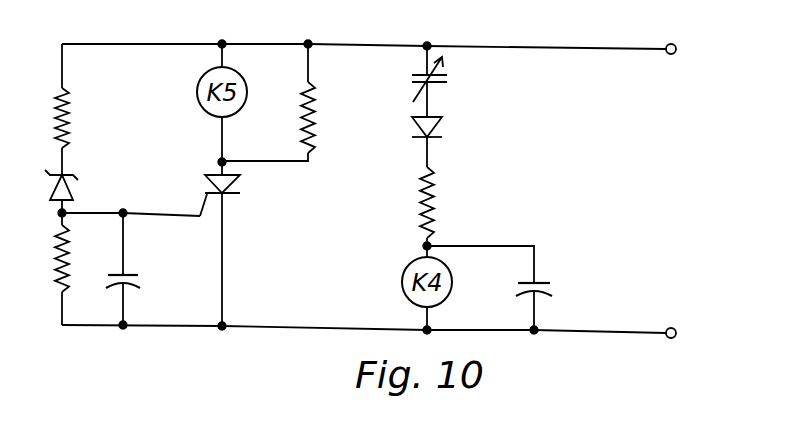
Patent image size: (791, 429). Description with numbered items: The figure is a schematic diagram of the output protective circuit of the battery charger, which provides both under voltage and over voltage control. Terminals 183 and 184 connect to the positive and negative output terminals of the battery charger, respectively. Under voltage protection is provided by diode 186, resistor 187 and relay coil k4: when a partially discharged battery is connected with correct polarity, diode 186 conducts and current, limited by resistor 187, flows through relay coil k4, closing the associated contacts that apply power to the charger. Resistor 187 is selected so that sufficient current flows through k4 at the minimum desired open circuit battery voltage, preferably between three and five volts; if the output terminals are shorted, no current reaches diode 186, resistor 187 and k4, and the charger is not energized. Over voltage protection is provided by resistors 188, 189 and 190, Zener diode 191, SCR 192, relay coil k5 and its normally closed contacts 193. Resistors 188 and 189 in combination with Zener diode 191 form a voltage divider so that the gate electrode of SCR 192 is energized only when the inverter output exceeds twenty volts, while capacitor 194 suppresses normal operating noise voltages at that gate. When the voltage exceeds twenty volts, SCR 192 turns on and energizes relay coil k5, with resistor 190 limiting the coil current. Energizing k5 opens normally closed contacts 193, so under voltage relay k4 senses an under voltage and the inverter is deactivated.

The terminal 183 is at (676, 51).
The terminal 184 is at (676, 329).
The diode 186 is at (435, 128).
The resistor 187 is at (430, 200).
The resistor 188 is at (77, 110).
The resistor 189 is at (68, 265).
The resistor 190 is at (305, 113).
The Zener diode 191 is at (75, 192).
The SCR 192 is at (232, 197).
The normally closed contacts 193 is at (440, 68).
The capacitor 194 is at (163, 267).